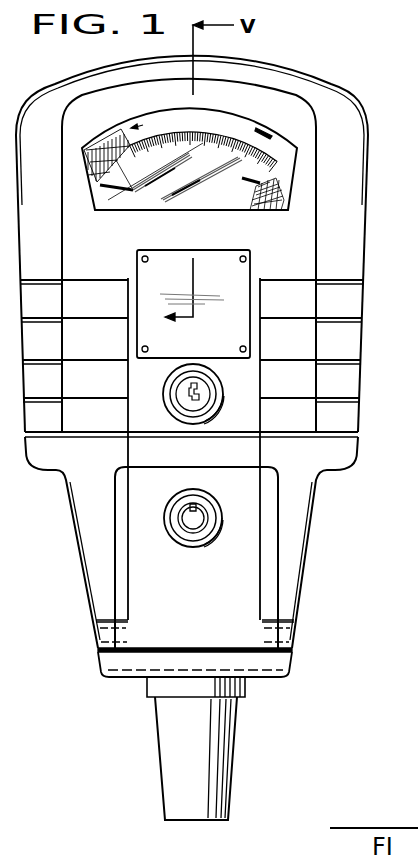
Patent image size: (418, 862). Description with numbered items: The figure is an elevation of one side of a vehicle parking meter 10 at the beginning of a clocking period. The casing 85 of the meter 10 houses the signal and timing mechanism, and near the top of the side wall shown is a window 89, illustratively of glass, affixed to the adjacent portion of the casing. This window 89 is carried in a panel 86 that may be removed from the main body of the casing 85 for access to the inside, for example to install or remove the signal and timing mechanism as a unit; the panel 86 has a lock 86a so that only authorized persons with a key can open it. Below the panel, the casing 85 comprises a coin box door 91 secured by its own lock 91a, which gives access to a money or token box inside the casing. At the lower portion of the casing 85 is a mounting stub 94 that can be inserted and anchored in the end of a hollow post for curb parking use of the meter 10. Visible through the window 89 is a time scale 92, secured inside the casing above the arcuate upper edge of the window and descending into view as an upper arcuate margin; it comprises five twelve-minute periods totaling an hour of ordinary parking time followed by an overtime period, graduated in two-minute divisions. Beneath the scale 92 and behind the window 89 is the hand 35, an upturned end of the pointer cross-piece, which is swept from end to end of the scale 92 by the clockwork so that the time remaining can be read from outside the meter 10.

The meter 10 is at (66, 77).
The casing 85 is at (350, 100).
The panel 86 is at (308, 230).
The lock 86a is at (208, 394).
The window 89 is at (150, 200).
The time scale 92 is at (212, 150).
The upturned end 35 is at (271, 204).
The coin box door 91 is at (243, 590).
The lock 91a is at (190, 528).
The mounting stub 94 is at (233, 755).